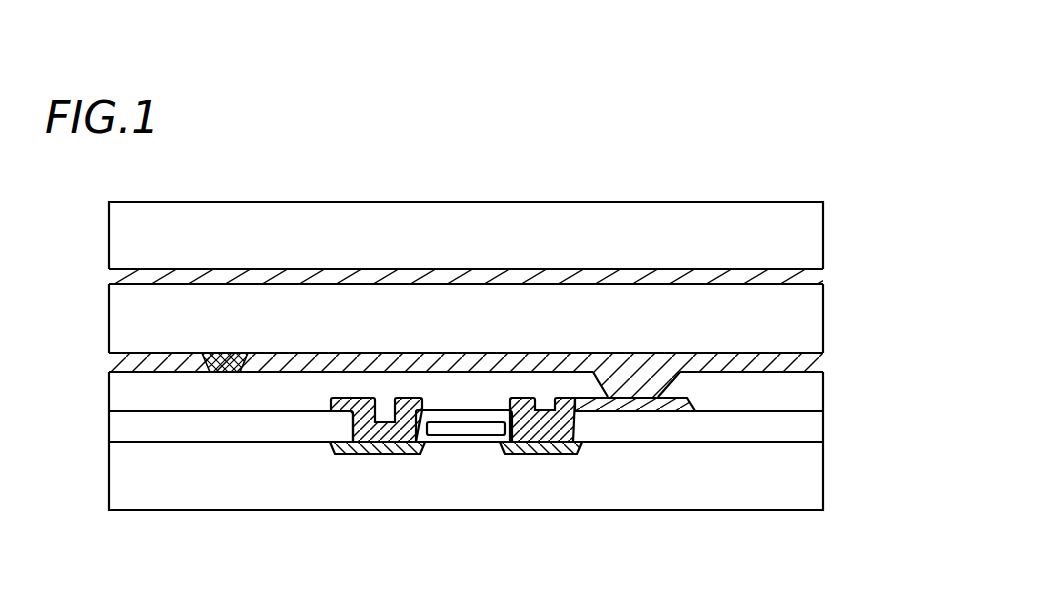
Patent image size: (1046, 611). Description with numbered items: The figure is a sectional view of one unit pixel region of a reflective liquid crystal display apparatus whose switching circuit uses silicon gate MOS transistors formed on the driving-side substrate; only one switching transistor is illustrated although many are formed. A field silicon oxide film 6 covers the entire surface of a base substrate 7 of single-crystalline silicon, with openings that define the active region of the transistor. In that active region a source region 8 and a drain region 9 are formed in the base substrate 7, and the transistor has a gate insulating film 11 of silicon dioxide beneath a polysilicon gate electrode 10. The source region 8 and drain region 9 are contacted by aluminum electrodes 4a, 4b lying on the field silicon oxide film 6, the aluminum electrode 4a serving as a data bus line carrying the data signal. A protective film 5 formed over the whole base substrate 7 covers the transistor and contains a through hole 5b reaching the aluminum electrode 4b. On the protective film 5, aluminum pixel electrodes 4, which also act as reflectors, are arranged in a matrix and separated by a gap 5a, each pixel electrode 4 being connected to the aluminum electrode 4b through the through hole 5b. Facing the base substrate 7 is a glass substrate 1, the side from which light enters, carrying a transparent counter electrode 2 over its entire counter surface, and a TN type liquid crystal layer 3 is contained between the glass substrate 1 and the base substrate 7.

The glass substrate 1 is at (802, 228).
The transparent counter electrode 2 is at (812, 277).
The liquid crystal layer 3 is at (806, 311).
The pixel electrode 4 is at (760, 375).
The aluminum electrode 4a is at (410, 398).
The aluminum electrode 4b is at (667, 413).
The protective film 5 is at (810, 391).
The gap 5a is at (235, 333).
The through hole 5b is at (652, 337).
The field silicon oxide film 6 is at (807, 428).
The base substrate 7 is at (808, 467).
The source region 8 is at (387, 456).
The drain region 9 is at (542, 455).
The gate electrode 10 is at (457, 433).
The gate insulating film 11 is at (482, 441).